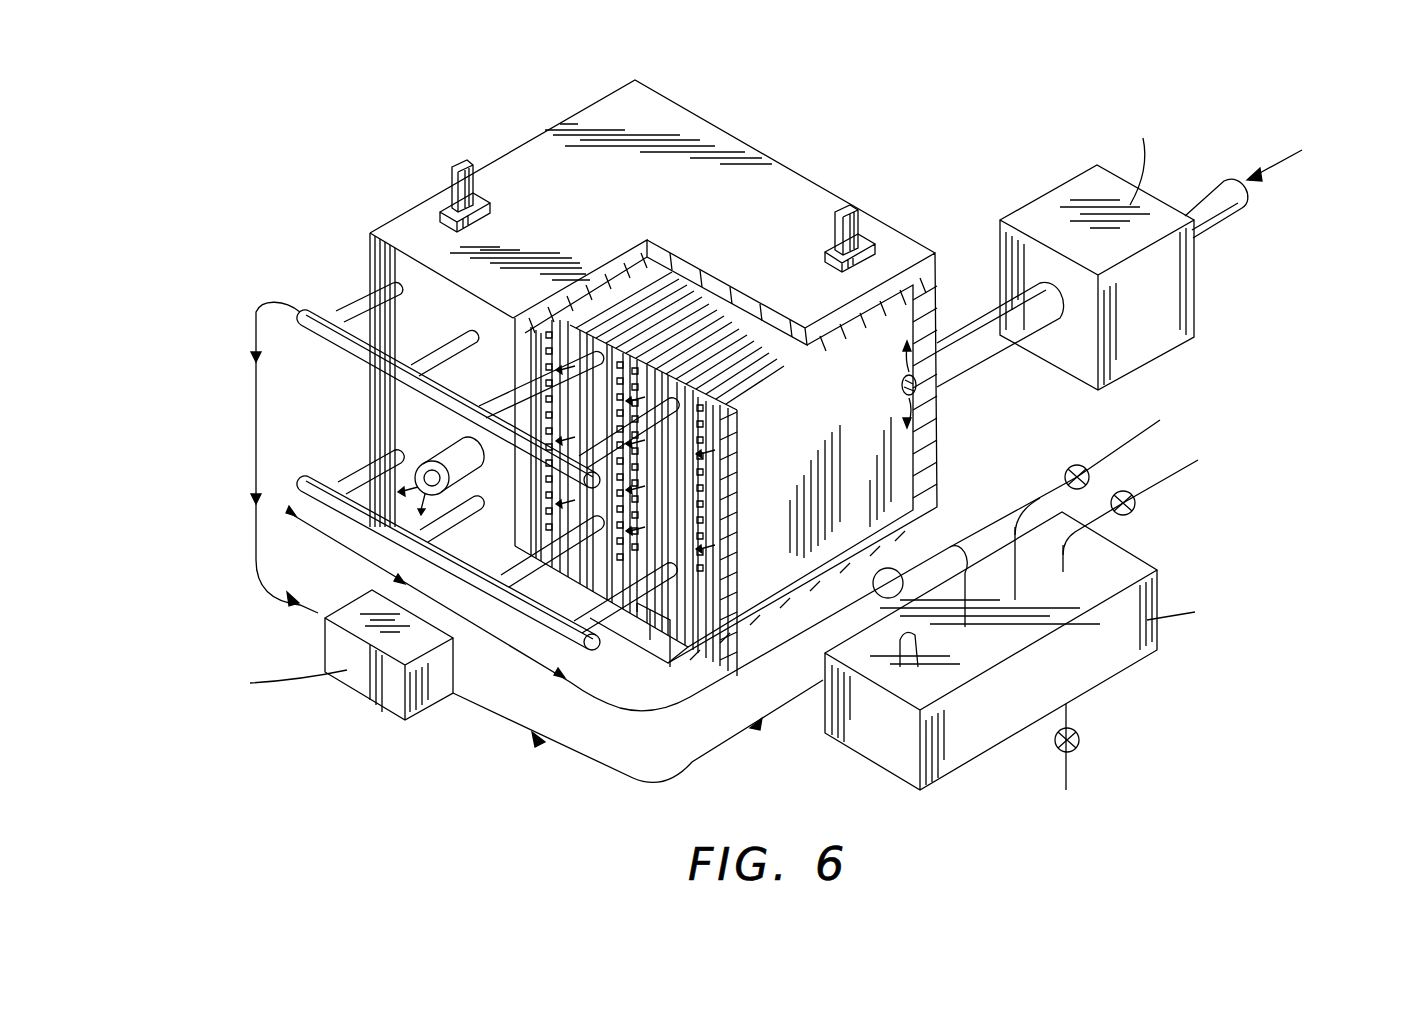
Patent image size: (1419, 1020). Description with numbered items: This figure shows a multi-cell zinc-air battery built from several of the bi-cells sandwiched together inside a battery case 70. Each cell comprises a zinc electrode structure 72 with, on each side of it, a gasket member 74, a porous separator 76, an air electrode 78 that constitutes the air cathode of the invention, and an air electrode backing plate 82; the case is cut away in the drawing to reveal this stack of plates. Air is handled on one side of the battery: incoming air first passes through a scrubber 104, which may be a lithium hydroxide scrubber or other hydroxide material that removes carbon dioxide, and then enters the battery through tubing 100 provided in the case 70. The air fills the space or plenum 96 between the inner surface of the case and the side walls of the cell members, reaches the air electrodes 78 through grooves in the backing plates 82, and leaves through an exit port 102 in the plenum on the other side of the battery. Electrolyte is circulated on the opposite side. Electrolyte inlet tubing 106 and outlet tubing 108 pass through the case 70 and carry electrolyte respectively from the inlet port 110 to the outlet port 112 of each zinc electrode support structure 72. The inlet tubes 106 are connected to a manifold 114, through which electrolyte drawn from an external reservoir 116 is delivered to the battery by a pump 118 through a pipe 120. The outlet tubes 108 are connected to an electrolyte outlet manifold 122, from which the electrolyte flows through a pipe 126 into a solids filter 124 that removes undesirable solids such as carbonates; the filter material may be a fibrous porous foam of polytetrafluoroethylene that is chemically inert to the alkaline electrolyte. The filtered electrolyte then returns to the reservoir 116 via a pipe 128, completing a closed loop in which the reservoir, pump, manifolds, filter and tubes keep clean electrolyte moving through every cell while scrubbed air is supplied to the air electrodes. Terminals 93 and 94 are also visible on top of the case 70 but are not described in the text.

The case 70 is at (413, 222).
The zinc electrode structure 72 is at (680, 290).
The gasket member 74 is at (753, 332).
The porous separator 76 is at (717, 332).
The air electrode 78 is at (693, 335).
The air electrode backing plate 82 is at (615, 335).
The positive terminal 93 is at (860, 225).
The negative terminal 94 is at (450, 177).
The plenum 96 is at (912, 465).
The tubing 100 is at (993, 345).
The exit port 102 is at (430, 470).
The scrubber 104 is at (1063, 208).
The electrolyte inlet tubing 106 is at (362, 470).
The electrolyte outlet tubing 108 is at (510, 408).
The inlet port 110 is at (683, 582).
The outlet port 112 is at (628, 450).
The manifold 114 is at (318, 480).
The external reservoir 116 is at (1070, 665).
The pump 118 is at (900, 592).
The pipe 120 is at (600, 700).
The electrolyte outlet manifold 122 is at (352, 355).
The solids filter 124 is at (383, 692).
The pipe 126 is at (310, 608).
The pipe 128 is at (707, 752).